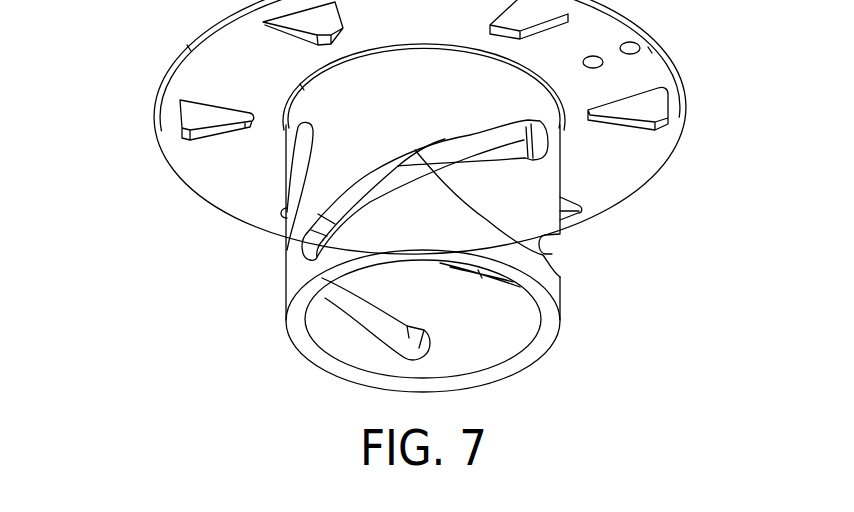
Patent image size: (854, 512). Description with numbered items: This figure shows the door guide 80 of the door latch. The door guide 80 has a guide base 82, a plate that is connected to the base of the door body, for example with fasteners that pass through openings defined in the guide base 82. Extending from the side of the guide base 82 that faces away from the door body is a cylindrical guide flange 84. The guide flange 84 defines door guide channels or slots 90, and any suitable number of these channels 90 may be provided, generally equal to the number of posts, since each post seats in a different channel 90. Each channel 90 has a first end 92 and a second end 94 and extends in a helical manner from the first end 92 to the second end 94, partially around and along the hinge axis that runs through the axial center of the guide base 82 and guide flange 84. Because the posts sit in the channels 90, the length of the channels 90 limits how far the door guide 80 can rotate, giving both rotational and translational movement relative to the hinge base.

The door guide 80 is at (160, 77).
The guide base 82 is at (198, 165).
The guide flange 84 is at (284, 288).
The door guide channel 90 is at (541, 250).
The first end 92 is at (538, 148).
The second end 94 is at (307, 248).